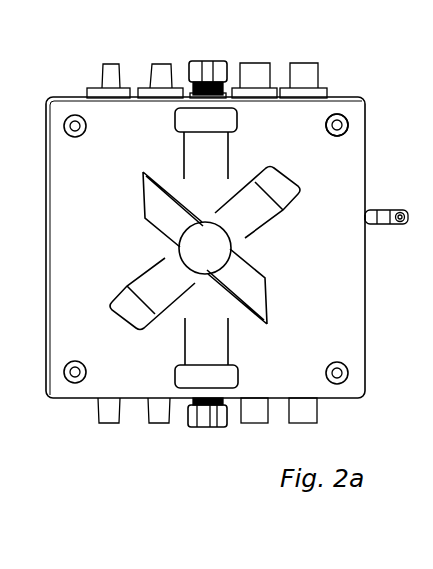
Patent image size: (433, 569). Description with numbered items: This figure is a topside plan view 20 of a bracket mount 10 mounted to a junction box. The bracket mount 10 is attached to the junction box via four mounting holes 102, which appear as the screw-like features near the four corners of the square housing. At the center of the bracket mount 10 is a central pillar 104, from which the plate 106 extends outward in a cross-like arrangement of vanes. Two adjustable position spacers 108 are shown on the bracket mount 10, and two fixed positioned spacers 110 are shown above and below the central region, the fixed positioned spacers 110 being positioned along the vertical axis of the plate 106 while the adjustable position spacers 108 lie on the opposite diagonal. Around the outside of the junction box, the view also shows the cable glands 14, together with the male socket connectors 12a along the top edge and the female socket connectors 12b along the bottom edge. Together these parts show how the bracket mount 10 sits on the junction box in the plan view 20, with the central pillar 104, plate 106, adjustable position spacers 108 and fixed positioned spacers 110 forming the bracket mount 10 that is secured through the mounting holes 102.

The bracket mount 10 is at (352, 318).
The male socket connectors 12a is at (103, 70).
The female socket connectors 12b is at (308, 418).
The cable glands 14 is at (200, 422).
The plan view 20 is at (183, 447).
The mounting holes 102 is at (343, 113).
The central pillar 104 is at (193, 255).
The plate 106 is at (143, 197).
The adjustable position spacers 108 is at (283, 202).
The fixed positioned spacers 110 is at (223, 128).